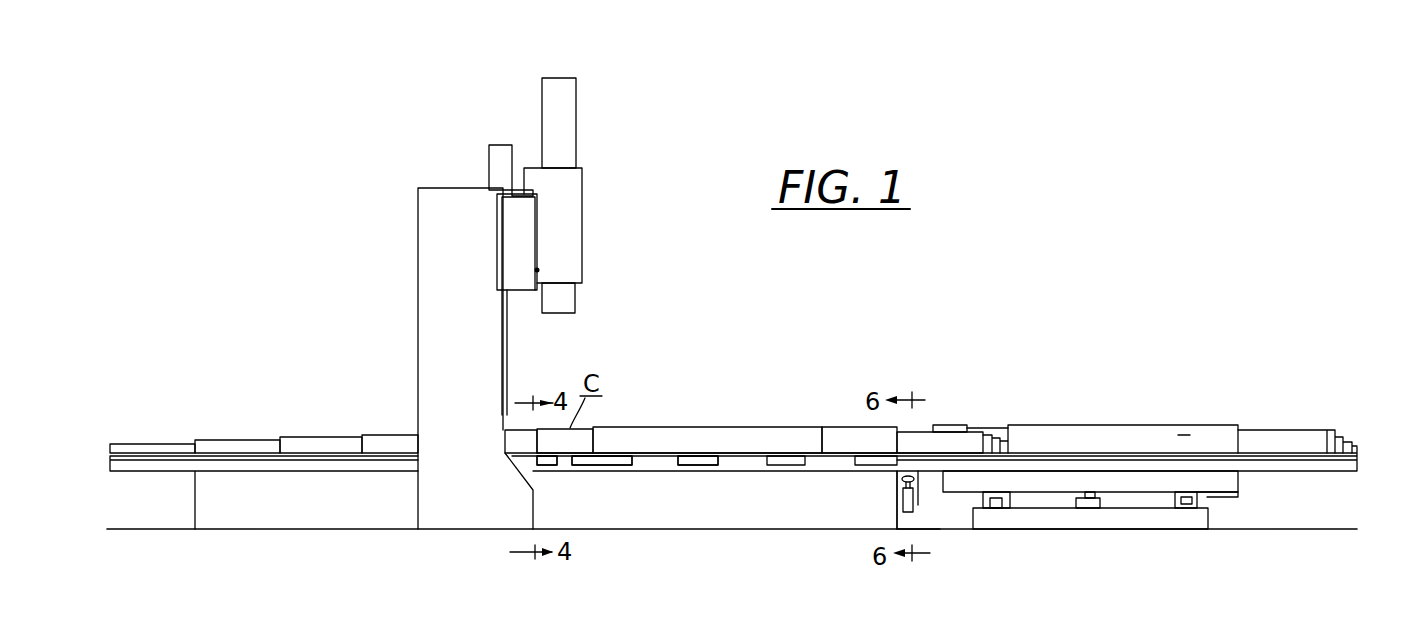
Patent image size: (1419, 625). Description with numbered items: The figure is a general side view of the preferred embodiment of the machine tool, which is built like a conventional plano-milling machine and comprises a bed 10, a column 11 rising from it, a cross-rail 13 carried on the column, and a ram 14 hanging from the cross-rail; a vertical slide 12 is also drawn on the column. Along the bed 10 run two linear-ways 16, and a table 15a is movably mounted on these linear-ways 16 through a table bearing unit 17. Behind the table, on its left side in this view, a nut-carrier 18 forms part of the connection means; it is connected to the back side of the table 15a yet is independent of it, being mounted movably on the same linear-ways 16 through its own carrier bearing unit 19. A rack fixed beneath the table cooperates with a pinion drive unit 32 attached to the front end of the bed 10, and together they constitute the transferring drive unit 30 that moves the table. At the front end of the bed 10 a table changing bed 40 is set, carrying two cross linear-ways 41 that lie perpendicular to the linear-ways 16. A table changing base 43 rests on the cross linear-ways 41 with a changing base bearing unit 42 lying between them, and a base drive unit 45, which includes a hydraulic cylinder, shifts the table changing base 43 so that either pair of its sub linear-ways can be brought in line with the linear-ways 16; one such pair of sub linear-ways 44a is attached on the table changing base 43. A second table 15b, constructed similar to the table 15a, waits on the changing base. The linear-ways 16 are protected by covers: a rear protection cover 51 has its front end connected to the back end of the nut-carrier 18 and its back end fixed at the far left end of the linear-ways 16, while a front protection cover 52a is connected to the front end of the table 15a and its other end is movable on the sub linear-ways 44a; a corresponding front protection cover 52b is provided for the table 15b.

The bed 10 is at (727, 529).
The column 11 is at (418, 302).
The vertical slide 12 is at (537, 212).
The cross-rail 13 is at (582, 252).
The ram 14 is at (575, 297).
The table 15a is at (755, 427).
The table 15b is at (1080, 425).
The linear-ways 16 is at (822, 428).
The table bearing unit 17 is at (700, 453).
The nut-carrier 18 is at (583, 428).
The carrier bearing unit 19 is at (547, 465).
The transferring drive unit 30 is at (865, 566).
The pinion drive unit 32 is at (923, 485).
The table changing bed 40 is at (1080, 520).
The cross linear-ways 41 is at (1182, 510).
The changing base bearing unit 42 is at (1207, 497).
The table changing base 43 is at (1240, 480).
The sub linear-ways 44a is at (1178, 435).
The base drive unit 45 is at (1098, 497).
The rear protection cover 51 is at (522, 442).
The front protection cover 52a is at (968, 425).
The front protection cover 52b is at (1293, 430).